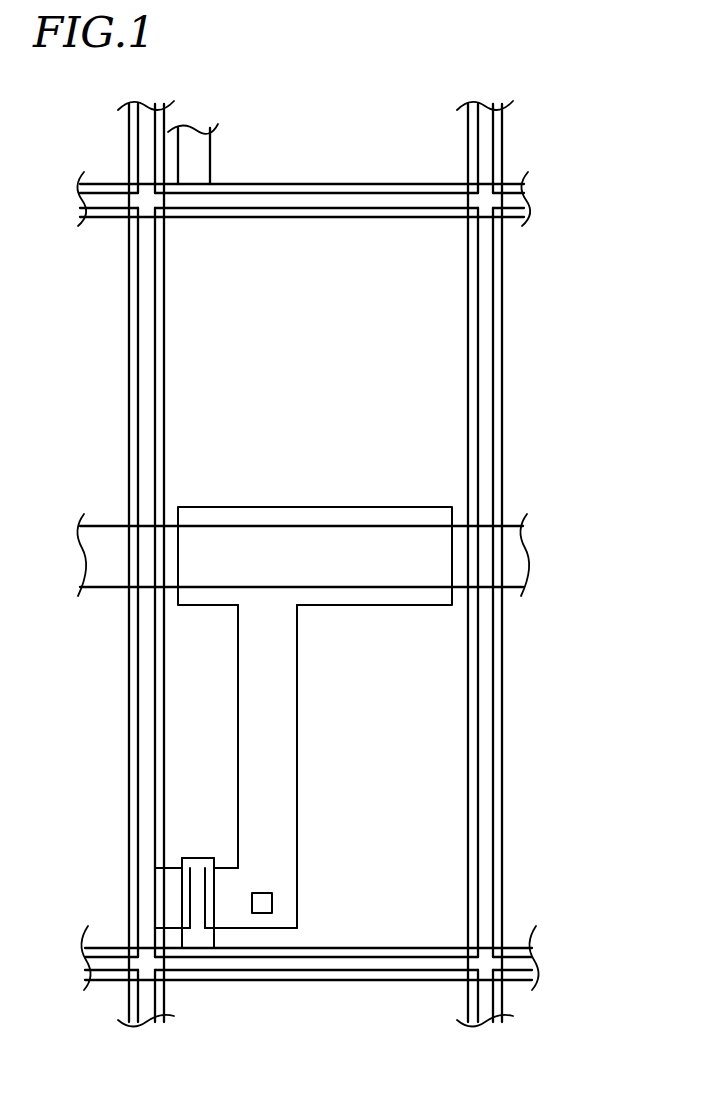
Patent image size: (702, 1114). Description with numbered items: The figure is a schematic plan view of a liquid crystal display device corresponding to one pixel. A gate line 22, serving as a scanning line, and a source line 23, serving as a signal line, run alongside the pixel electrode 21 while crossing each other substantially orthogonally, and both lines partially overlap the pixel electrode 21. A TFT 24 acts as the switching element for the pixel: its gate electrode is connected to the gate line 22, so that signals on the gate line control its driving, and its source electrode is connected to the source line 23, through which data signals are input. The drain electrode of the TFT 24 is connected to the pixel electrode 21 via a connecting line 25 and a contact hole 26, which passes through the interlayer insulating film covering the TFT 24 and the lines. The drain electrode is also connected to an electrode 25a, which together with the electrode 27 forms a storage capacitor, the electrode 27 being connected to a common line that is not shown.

The pixel electrode 21 is at (432, 353).
The gate line 22 is at (98, 183).
The source line 23 is at (501, 148).
The TFT 24 is at (200, 842).
The connecting line 25 is at (282, 713).
The electrode 25a is at (430, 507).
The contact hole 26 is at (260, 913).
The electrode 27 is at (510, 553).